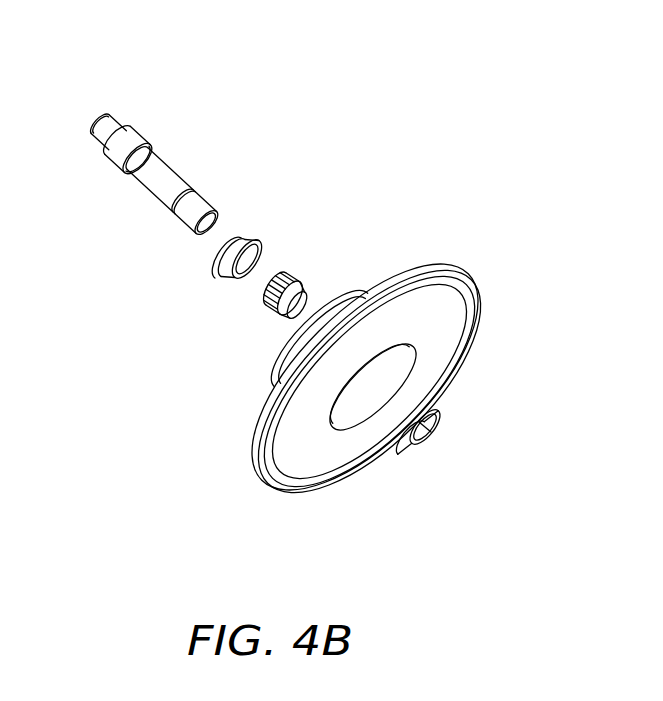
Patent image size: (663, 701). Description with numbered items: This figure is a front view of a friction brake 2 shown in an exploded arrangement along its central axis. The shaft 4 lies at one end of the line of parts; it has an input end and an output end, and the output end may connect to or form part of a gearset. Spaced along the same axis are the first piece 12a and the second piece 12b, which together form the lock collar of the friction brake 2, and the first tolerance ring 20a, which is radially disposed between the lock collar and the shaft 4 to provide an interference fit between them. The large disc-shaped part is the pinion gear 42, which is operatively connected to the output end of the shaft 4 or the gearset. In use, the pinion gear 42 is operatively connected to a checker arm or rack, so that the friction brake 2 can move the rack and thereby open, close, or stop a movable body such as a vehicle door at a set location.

The friction brake 2 is at (412, 152).
The shaft 4 is at (135, 184).
The first piece 12a is at (227, 276).
The second piece 12b is at (440, 432).
The first tolerance ring 20a is at (268, 314).
The pinion gear 42 is at (253, 443).